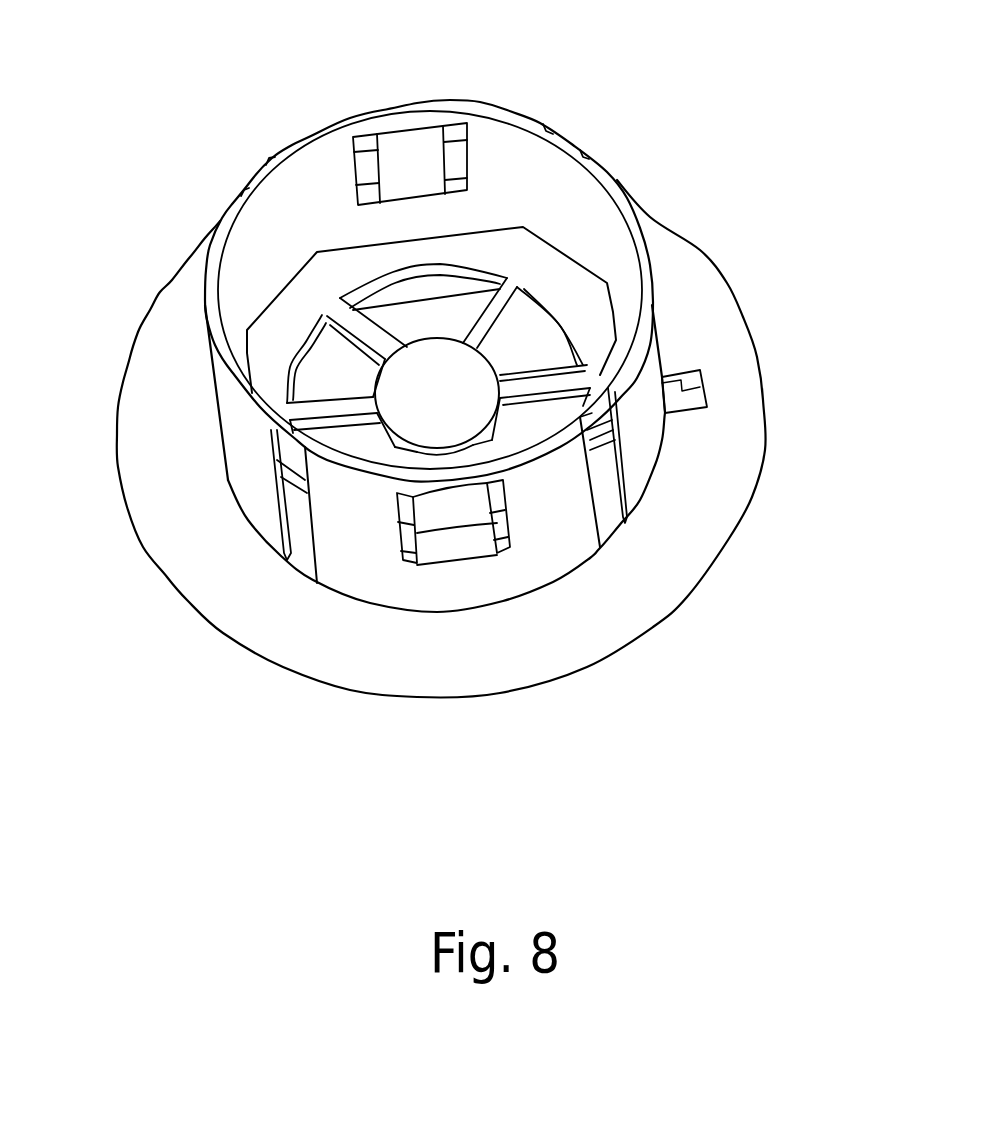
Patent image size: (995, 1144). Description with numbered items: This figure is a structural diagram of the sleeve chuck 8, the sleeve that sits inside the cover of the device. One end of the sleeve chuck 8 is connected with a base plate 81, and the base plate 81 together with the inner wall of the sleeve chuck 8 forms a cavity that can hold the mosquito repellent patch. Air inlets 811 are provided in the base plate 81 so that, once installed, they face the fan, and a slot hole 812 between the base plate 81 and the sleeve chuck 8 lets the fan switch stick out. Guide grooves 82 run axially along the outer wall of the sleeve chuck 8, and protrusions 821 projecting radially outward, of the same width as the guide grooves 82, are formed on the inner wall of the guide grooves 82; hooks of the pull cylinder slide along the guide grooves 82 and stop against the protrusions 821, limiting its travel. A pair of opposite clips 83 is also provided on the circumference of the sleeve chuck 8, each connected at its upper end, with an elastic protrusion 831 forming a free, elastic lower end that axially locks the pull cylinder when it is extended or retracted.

The sleeve chuck 8 is at (618, 202).
The base plate 81 is at (177, 370).
The air inlets 811 is at (420, 320).
The slot hole 812 is at (683, 400).
The guide grooves 82 is at (300, 535).
The protrusions 821 is at (292, 475).
The clips 83 is at (413, 163).
The elastic protrusions 831 is at (447, 555).